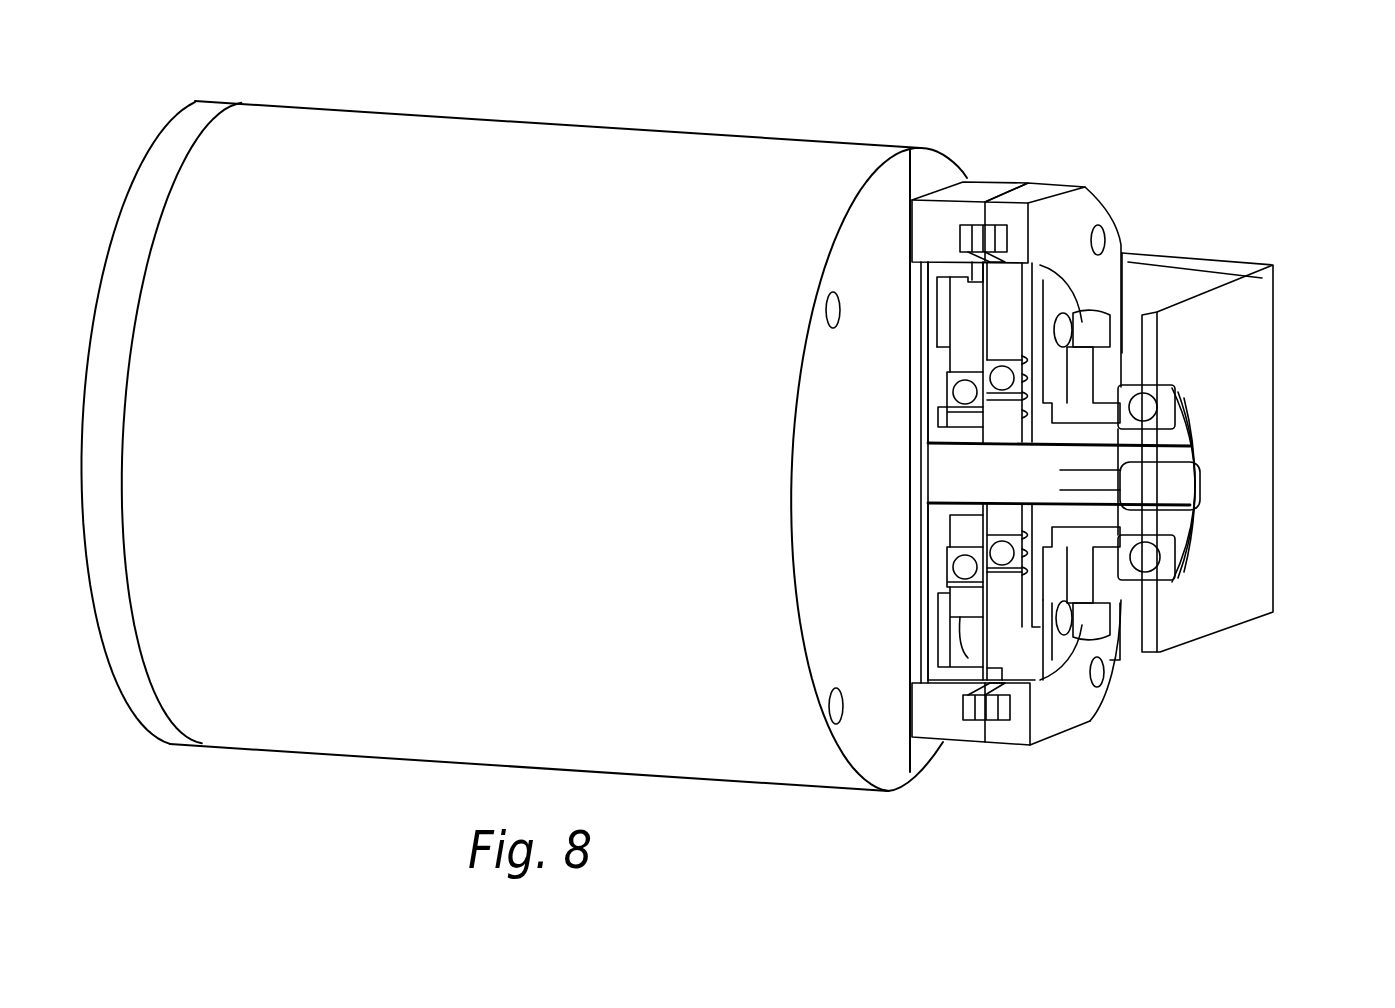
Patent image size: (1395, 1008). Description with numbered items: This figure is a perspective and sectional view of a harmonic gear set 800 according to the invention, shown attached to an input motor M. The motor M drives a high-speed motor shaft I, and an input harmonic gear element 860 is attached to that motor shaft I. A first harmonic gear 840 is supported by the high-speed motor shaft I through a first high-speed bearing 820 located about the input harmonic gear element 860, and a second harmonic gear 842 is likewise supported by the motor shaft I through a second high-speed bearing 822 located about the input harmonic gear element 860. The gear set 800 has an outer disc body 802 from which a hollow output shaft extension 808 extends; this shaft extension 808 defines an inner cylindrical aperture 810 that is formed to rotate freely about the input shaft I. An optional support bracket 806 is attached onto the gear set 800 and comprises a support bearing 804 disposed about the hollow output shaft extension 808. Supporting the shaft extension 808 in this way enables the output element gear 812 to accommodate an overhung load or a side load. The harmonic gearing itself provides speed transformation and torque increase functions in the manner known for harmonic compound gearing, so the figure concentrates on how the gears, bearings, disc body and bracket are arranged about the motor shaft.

The harmonic gear set 800 is at (787, 113).
The outer disc body 802 is at (1038, 655).
The support bearing 804 is at (1170, 580).
The support bracket 806 is at (1247, 308).
The hollow output shaft extension 808 is at (1192, 508).
The inner cylindrical aperture 810 is at (1165, 485).
The output element gear 812 is at (1108, 367).
The first high-speed bearing 820 is at (945, 376).
The second high-speed bearing 822 is at (1010, 397).
The first harmonic gear 840 is at (968, 658).
The second harmonic gear 842 is at (1040, 642).
The input harmonic gear element 860 is at (965, 503).
The input motor M is at (355, 700).
The high-speed motor shaft I is at (1205, 470).